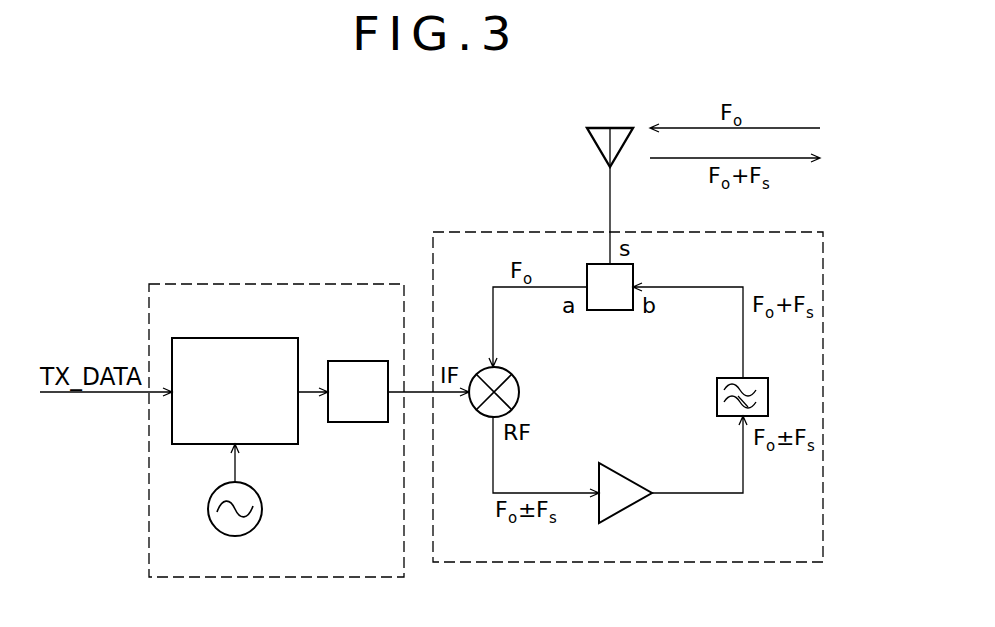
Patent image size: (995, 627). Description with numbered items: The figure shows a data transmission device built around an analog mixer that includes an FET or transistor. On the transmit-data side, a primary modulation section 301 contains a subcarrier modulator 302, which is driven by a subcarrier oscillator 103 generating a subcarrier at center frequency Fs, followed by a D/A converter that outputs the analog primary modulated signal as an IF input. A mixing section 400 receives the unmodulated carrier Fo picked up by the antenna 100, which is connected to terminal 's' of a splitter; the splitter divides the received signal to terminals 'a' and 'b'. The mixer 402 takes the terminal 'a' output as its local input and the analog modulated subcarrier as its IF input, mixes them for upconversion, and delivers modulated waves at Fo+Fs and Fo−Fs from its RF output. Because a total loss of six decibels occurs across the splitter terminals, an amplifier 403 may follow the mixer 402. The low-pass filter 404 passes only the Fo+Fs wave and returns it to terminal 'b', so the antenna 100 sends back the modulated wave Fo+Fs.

The antenna 100 is at (597, 147).
The subcarrier oscillator 103 is at (263, 509).
The primary modulation section 301 is at (272, 284).
The subcarrier modulator 302 is at (234, 338).
The mixing section 400 is at (641, 232).
The mixer 402 is at (521, 392).
The amplifier 403 is at (628, 507).
The low-pass filter 404 is at (716, 398).